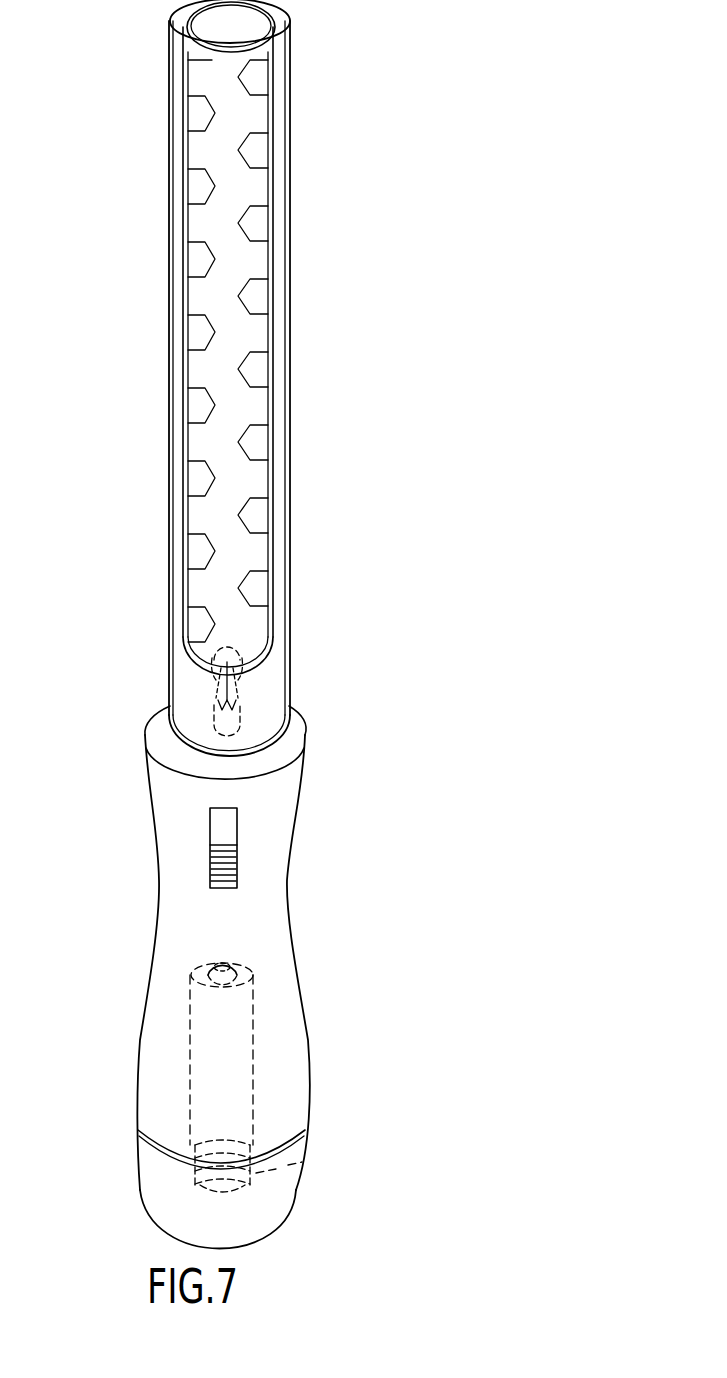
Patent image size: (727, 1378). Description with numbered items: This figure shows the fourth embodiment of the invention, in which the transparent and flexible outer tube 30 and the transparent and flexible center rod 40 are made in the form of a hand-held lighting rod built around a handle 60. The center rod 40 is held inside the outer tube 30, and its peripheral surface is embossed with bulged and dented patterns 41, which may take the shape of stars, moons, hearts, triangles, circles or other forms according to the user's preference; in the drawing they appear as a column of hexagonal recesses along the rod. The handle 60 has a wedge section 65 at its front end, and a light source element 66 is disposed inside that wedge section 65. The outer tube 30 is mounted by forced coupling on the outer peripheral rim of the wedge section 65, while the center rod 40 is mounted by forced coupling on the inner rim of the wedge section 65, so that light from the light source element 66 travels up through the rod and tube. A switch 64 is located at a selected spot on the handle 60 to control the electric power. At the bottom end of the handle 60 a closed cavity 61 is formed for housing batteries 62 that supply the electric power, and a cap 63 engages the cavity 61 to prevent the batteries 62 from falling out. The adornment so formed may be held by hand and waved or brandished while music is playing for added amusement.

The outer tube 30 is at (284, 193).
The center rod 40 is at (208, 290).
The bulged and dented patterns 41 is at (258, 371).
The light source element 66 is at (200, 652).
The wedge section 65 is at (258, 700).
The handle 60 is at (283, 828).
The switch 64 is at (218, 832).
The batteries 62 is at (207, 1025).
The cavity 61 is at (290, 1163).
The cap 63 is at (258, 1210).